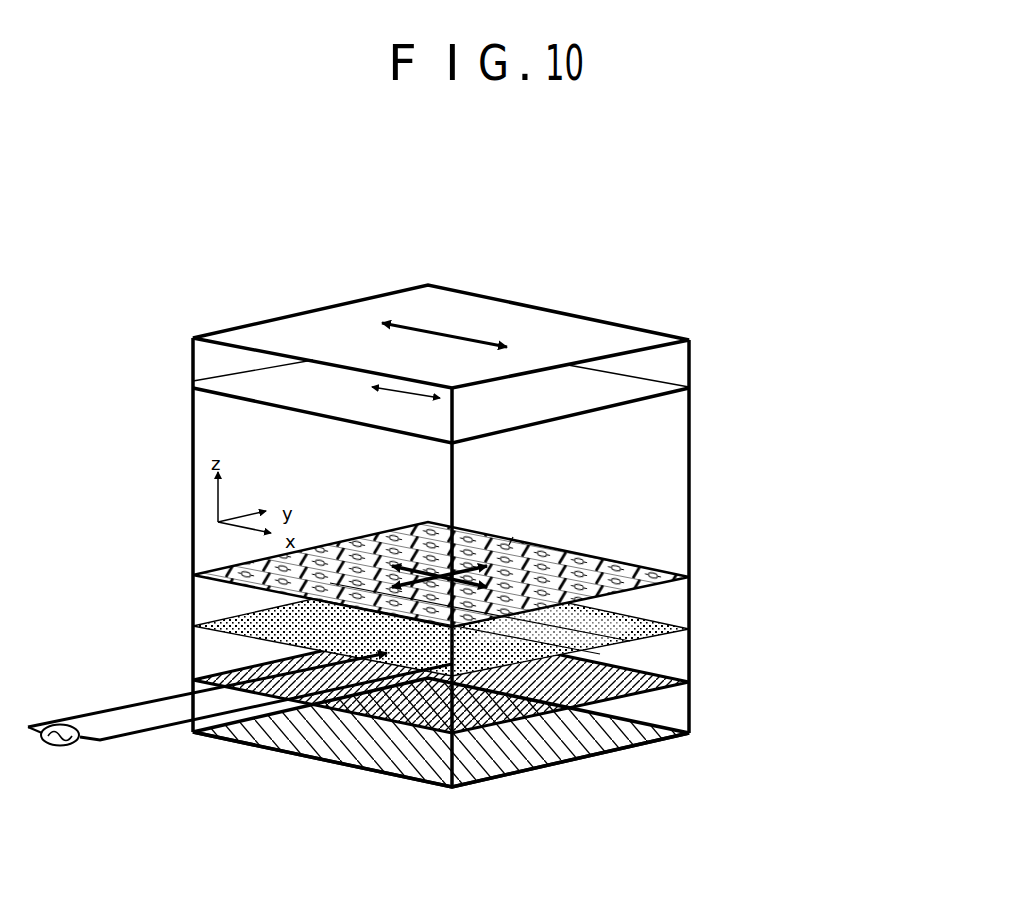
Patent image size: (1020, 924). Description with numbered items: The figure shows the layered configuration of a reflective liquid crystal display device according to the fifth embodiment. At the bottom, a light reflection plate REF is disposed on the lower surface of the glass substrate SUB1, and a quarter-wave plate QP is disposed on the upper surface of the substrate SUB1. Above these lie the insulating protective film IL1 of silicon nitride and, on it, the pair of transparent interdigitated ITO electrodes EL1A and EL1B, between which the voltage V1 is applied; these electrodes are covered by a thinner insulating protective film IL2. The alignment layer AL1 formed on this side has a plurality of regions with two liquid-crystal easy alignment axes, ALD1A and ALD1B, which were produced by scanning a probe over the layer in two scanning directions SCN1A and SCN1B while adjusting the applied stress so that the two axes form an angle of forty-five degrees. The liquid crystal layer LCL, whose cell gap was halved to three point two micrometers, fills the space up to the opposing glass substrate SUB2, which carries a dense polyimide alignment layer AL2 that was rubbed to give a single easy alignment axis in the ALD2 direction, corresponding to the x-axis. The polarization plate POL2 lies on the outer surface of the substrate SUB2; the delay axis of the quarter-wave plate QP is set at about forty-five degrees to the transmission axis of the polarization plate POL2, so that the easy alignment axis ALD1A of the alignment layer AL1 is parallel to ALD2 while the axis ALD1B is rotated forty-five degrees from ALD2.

The polarization plate POL2 is at (468, 335).
The substrate SUB2 is at (190, 345).
The easy alignment axis direction ALD2 is at (372, 387).
The liquid crystal layer LCL is at (213, 425).
The alignment layer AL2 is at (607, 395).
The easy alignment axis direction ALD1A is at (407, 535).
The easy alignment axis direction ALD1B is at (513, 537).
The alignment layer AL1 is at (688, 578).
The scanning direction SCN1B is at (607, 595).
The scanning direction SCN1A is at (633, 575).
The interdigitated electrode EL1A is at (252, 623).
The interdigitated electrode EL1B is at (647, 623).
The insulating protective film IL2 is at (193, 638).
The λ/4 plate QP is at (580, 677).
The insulating protective film IL1 is at (195, 662).
The applied voltage V1 is at (60, 750).
The light reflection plate REF is at (640, 745).
The substrate SUB1 is at (503, 767).